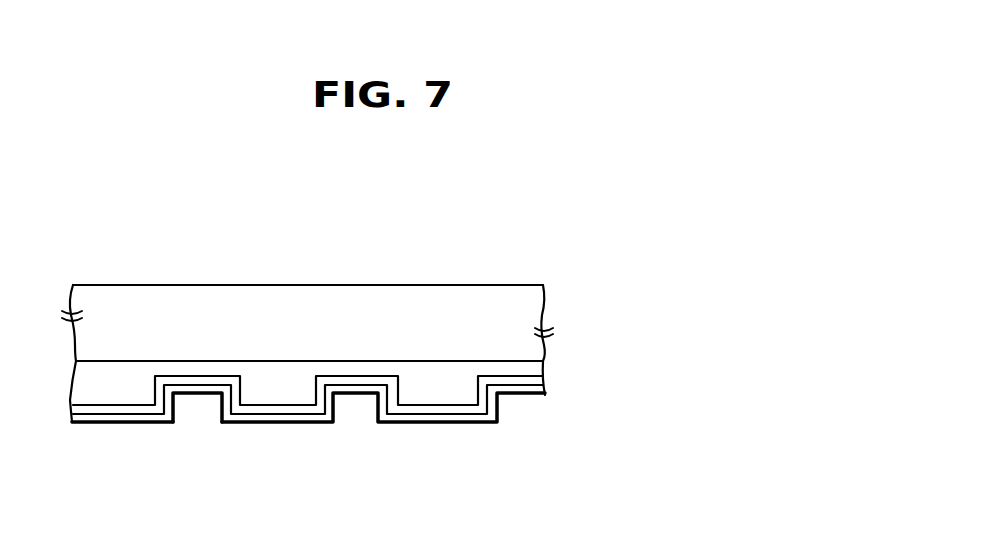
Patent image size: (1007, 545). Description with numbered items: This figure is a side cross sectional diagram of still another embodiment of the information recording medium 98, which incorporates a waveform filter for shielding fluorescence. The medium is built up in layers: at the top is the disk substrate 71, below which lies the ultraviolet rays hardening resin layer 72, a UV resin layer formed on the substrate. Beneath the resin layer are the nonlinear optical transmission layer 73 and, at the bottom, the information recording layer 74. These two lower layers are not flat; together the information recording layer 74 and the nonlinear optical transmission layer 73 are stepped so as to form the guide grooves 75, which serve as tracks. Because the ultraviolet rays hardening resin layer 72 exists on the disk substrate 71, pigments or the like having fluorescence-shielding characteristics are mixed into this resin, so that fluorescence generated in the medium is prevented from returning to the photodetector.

The information recording medium 98 is at (74, 278).
The disk substrate 71 is at (543, 297).
The ultraviolet rays hardening resin layer 72 is at (545, 364).
The nonlinear optical transmission layer 73 is at (545, 380).
The information recording layer 74 is at (545, 393).
The guide grooves 75 is at (193, 403).